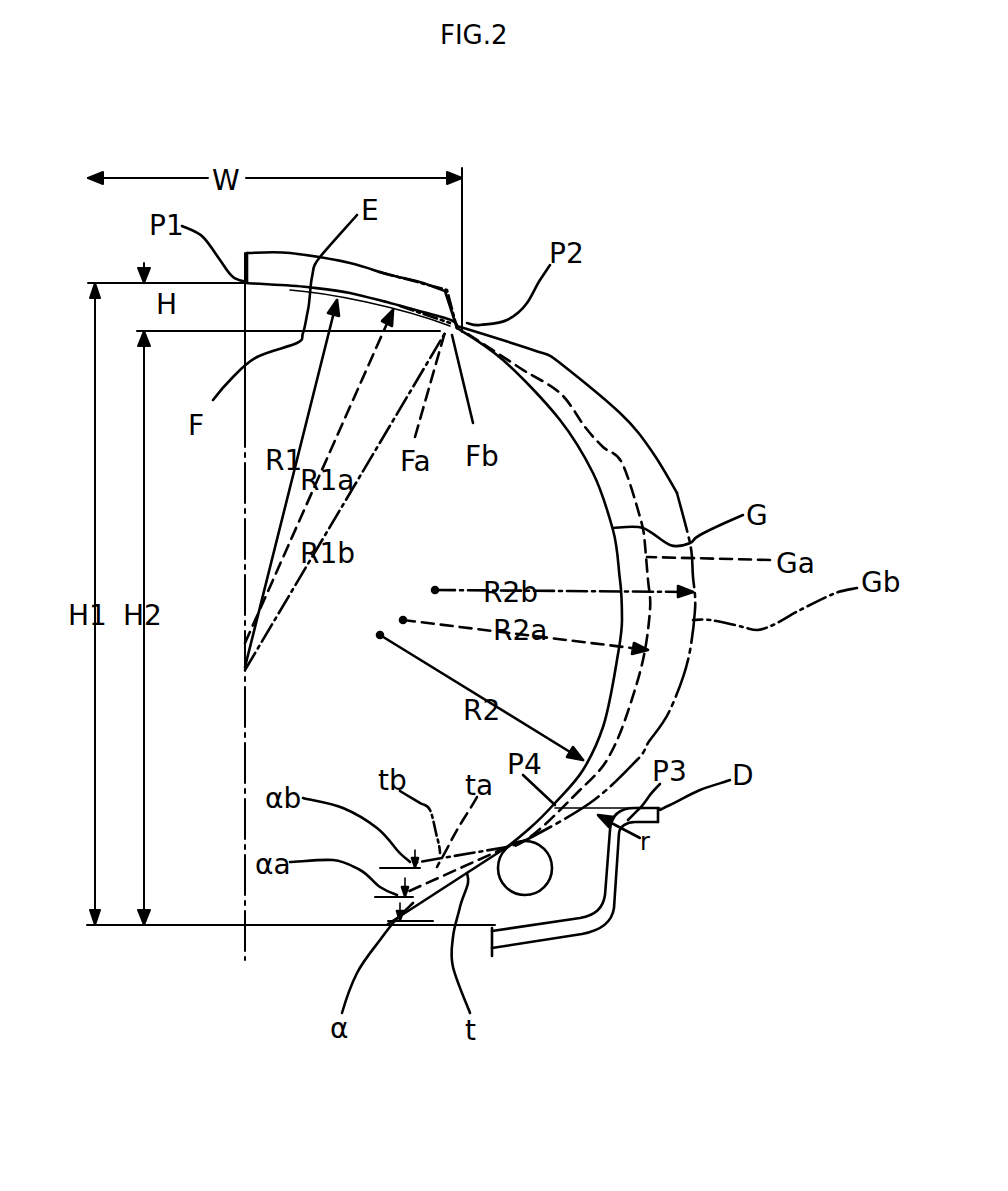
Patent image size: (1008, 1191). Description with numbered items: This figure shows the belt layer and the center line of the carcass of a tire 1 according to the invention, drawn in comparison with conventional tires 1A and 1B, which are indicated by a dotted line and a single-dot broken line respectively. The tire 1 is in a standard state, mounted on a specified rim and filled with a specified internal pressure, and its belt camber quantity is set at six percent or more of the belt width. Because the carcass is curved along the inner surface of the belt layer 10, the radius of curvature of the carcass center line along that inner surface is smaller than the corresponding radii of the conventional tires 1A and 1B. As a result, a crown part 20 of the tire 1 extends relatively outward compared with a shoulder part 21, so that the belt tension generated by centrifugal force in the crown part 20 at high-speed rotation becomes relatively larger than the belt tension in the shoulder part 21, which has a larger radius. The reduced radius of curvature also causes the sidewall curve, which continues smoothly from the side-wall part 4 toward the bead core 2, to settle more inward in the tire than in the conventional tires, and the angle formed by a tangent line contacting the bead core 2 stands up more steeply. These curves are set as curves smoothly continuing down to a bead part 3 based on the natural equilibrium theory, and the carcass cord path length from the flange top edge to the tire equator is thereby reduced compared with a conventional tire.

The tire 1 is at (620, 418).
The conventional tire 1A is at (622, 463).
The conventional tire 1B is at (631, 657).
The bead core 2 is at (530, 880).
The bead part 3 is at (613, 843).
The side-wall part 4 is at (690, 685).
The belt layer 10 is at (352, 212).
The crown part 20 is at (290, 253).
The shoulder part 21 is at (447, 290).